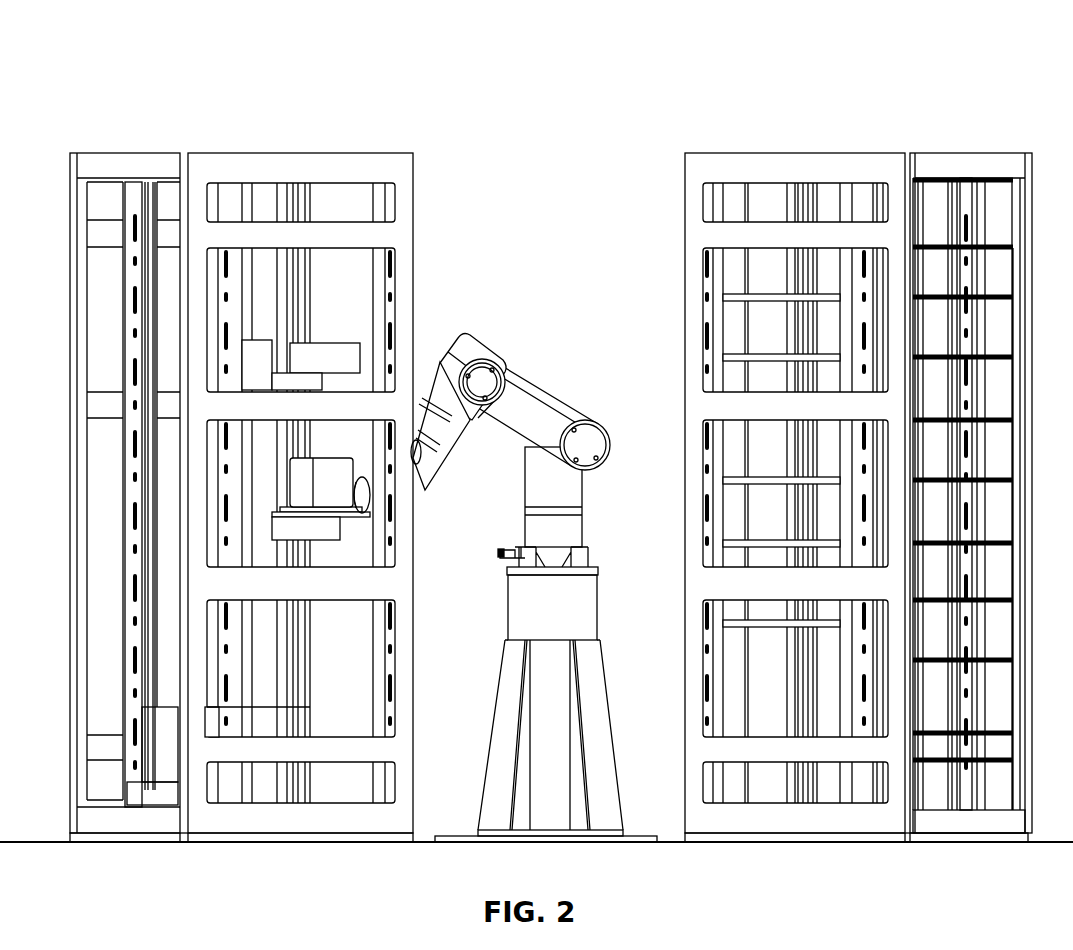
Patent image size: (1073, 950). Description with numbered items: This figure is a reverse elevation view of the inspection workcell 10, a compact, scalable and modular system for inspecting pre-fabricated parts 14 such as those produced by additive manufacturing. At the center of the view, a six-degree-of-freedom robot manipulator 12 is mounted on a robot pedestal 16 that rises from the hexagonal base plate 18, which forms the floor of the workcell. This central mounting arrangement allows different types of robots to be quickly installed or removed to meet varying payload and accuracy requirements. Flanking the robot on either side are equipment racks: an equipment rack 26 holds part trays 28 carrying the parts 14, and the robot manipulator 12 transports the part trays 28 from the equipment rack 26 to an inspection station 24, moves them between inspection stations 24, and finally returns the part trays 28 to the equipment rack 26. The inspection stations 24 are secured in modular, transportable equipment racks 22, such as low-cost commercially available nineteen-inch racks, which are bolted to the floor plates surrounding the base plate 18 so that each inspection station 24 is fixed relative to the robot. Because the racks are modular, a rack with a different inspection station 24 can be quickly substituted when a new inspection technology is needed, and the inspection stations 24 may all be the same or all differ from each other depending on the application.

The inspection workcell 10 is at (611, 47).
The robot manipulator 12 is at (537, 352).
The pre-fabricated parts 14 is at (355, 468).
The robot pedestal 16 is at (490, 725).
The base plate 18 is at (665, 835).
The equipment rack 22 is at (297, 135).
The inspection station 24 is at (420, 292).
The equipment rack 26 is at (968, 110).
The part tray 28 is at (347, 513).